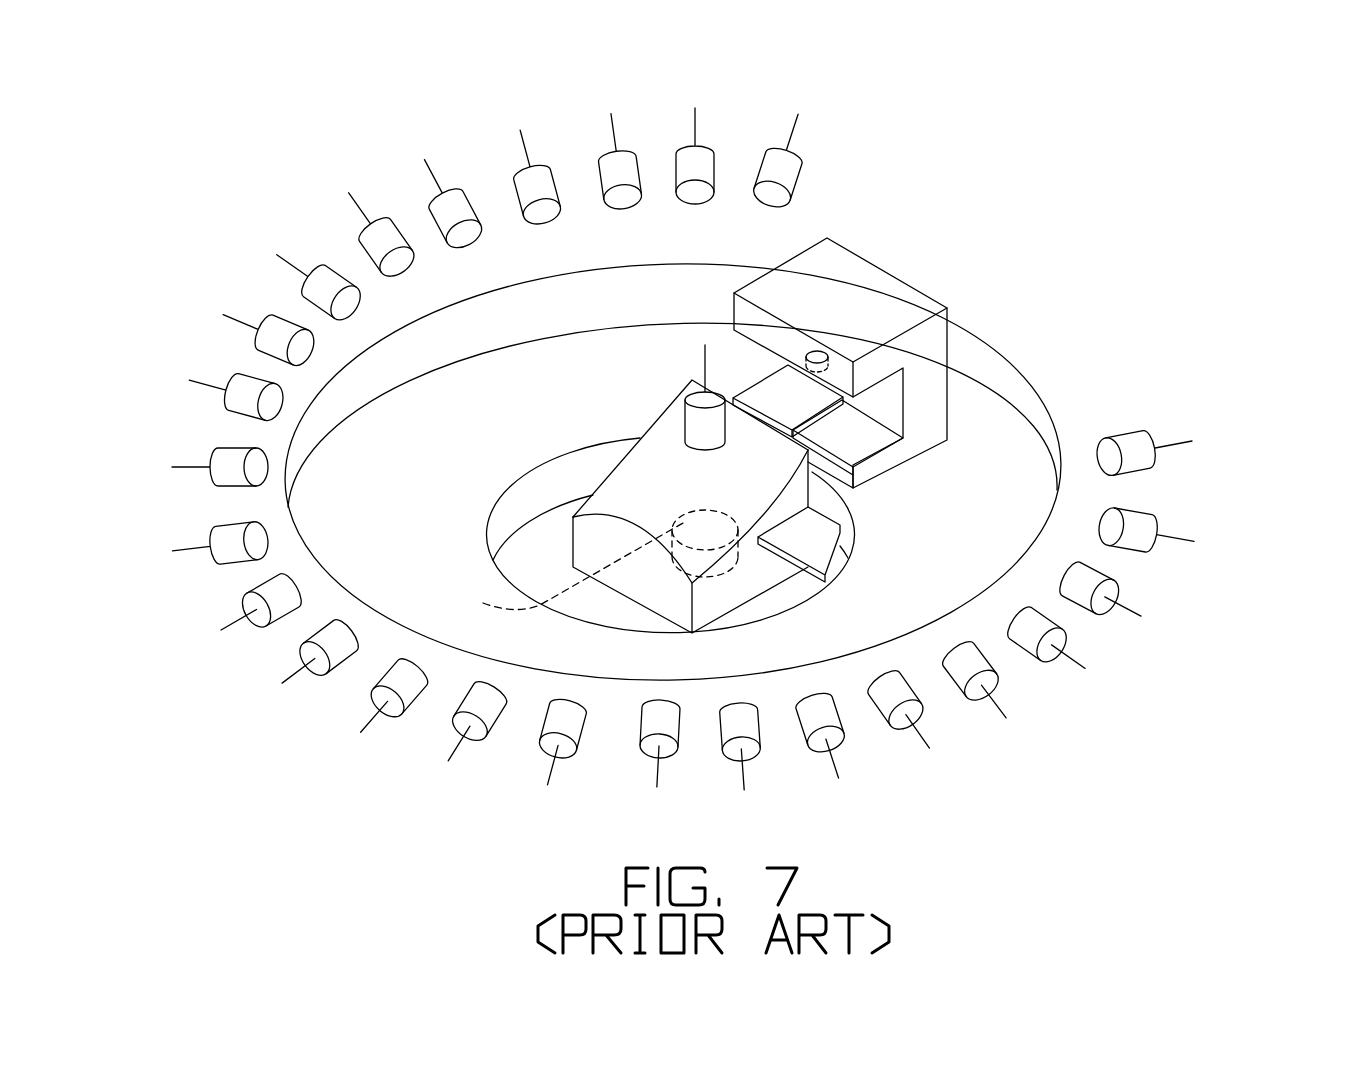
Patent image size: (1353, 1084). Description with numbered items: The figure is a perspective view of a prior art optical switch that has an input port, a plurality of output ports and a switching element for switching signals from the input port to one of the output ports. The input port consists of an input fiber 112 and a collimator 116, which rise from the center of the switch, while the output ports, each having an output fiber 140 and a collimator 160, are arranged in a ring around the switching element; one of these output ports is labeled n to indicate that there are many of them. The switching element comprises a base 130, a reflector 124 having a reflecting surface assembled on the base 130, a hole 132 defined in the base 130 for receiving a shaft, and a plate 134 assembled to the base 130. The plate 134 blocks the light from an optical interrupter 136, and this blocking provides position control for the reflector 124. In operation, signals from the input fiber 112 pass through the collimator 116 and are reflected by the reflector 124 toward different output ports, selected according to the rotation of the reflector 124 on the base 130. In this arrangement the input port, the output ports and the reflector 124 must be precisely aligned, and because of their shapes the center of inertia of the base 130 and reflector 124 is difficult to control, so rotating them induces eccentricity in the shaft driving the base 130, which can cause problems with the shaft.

The magnet n is at (792, 131).
The input fiber 112 is at (700, 364).
The collimator 116 is at (690, 421).
The reflector 124 is at (760, 480).
The base 130 is at (728, 607).
The hole 132 is at (555, 566).
The plate 134 is at (815, 542).
The optical interrupter 136 is at (872, 294).
The output fibers 140 is at (1182, 443).
The collimators 160 is at (1120, 435).